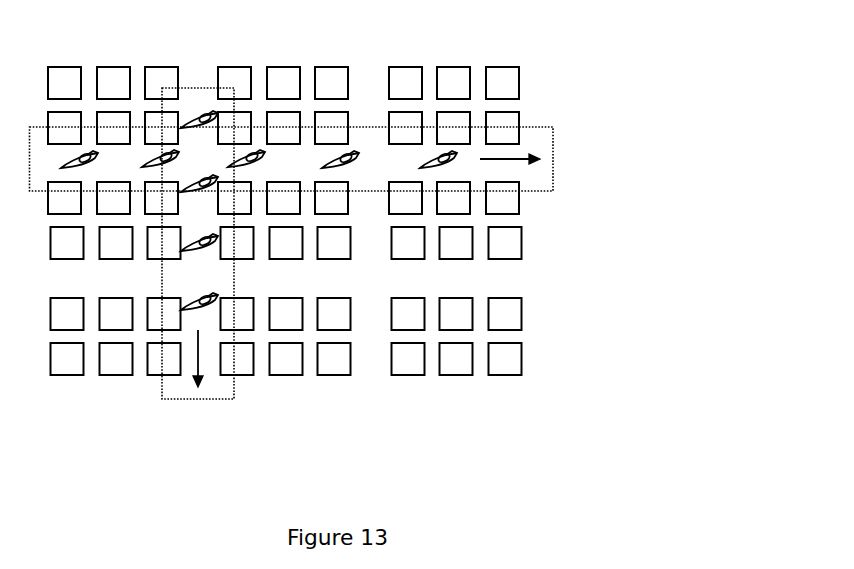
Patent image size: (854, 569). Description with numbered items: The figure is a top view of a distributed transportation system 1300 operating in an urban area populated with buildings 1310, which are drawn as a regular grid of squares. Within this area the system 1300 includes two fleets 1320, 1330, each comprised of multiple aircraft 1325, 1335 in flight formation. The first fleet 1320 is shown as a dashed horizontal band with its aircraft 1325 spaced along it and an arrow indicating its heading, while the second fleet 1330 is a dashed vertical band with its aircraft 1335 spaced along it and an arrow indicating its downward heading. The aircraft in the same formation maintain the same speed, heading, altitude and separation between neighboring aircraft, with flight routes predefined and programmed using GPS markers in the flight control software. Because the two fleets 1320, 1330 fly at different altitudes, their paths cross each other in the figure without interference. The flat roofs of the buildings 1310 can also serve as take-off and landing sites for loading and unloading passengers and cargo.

The distributed transportation system 1300 is at (330, 263).
The buildings 1310 is at (517, 362).
The fleet 1320 is at (553, 170).
The aircraft 1325 is at (437, 157).
The fleet 1330 is at (163, 400).
The aircraft 1335 is at (193, 307).